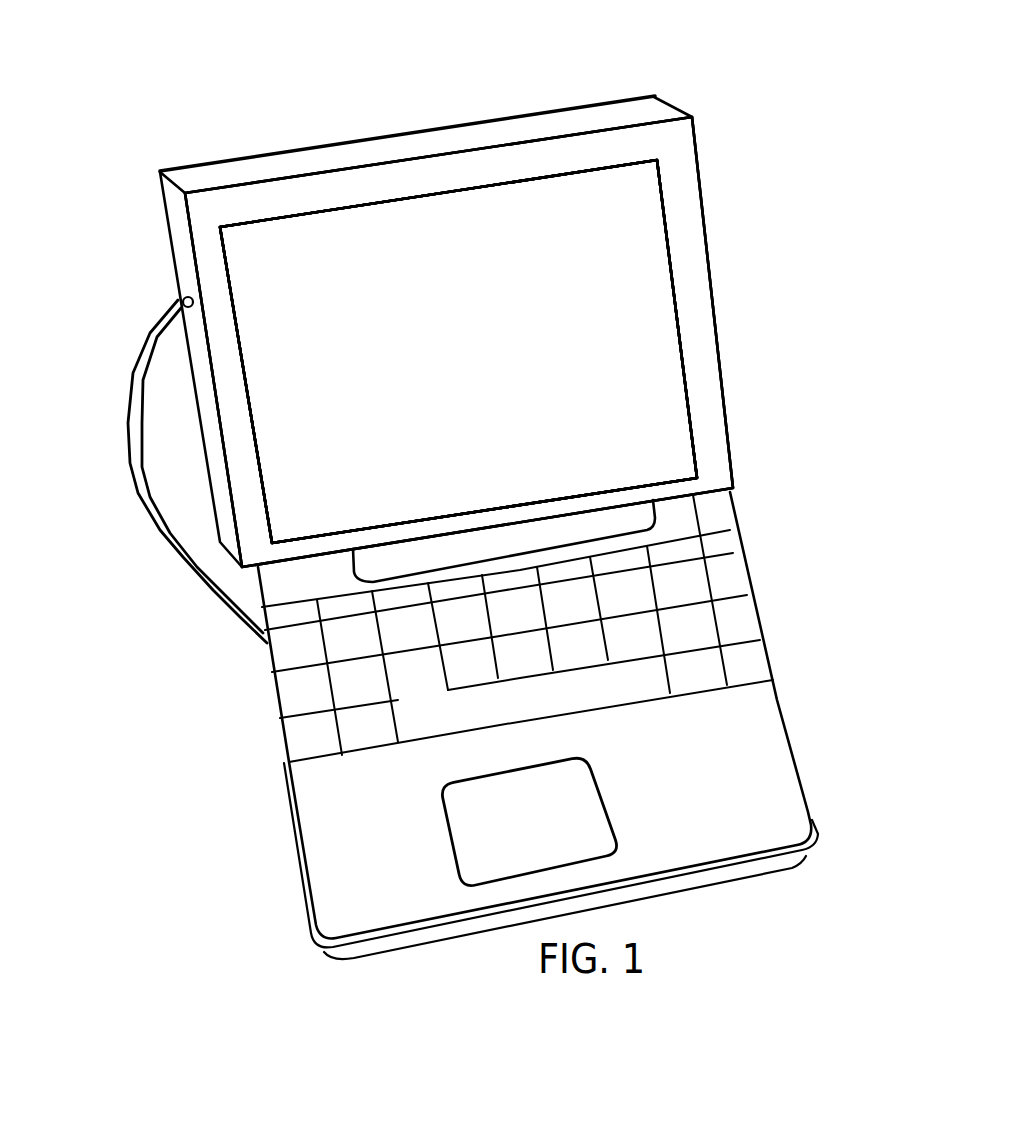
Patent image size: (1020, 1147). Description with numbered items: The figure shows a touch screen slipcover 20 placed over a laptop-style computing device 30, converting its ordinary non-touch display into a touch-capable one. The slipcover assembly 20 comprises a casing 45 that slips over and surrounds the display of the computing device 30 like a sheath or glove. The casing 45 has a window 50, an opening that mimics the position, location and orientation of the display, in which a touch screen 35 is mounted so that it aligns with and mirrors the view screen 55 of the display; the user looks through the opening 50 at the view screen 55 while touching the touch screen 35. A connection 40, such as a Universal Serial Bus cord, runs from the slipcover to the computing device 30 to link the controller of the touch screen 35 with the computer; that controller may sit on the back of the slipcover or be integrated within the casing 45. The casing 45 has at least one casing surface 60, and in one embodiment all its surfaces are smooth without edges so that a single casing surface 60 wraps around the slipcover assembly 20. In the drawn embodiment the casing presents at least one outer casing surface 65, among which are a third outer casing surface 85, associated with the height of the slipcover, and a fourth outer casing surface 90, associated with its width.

The touch screen slipcover 20 is at (728, 97).
The computing device 30 is at (770, 702).
The touch screen 35 is at (673, 428).
The connection 40 is at (127, 400).
The casing 45 is at (685, 217).
The window 50 is at (665, 345).
The view screen 55 is at (655, 288).
The casing surface 60 is at (683, 172).
The outer casing surface 65 is at (530, 153).
The third outer casing surface 85 is at (173, 230).
The fourth outer casing surface 90 is at (212, 175).